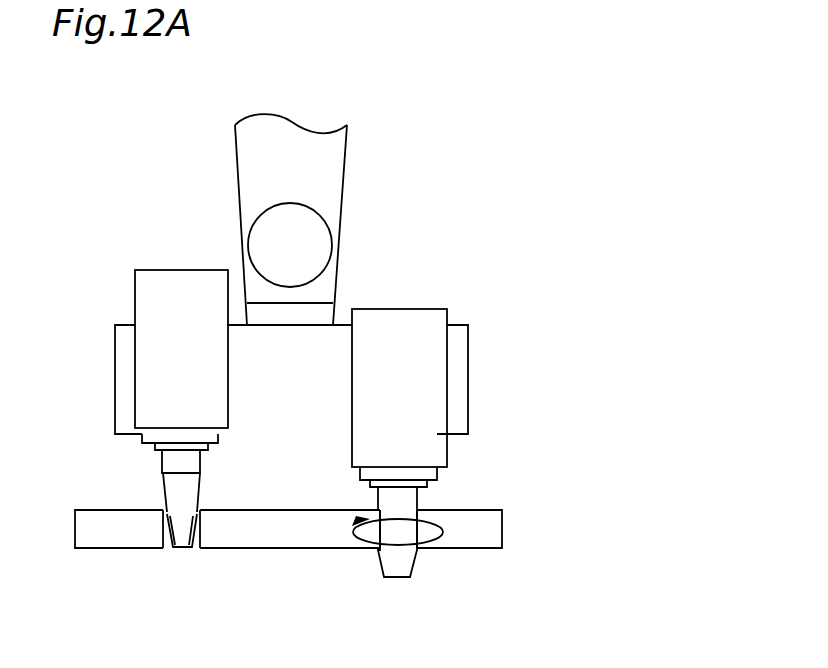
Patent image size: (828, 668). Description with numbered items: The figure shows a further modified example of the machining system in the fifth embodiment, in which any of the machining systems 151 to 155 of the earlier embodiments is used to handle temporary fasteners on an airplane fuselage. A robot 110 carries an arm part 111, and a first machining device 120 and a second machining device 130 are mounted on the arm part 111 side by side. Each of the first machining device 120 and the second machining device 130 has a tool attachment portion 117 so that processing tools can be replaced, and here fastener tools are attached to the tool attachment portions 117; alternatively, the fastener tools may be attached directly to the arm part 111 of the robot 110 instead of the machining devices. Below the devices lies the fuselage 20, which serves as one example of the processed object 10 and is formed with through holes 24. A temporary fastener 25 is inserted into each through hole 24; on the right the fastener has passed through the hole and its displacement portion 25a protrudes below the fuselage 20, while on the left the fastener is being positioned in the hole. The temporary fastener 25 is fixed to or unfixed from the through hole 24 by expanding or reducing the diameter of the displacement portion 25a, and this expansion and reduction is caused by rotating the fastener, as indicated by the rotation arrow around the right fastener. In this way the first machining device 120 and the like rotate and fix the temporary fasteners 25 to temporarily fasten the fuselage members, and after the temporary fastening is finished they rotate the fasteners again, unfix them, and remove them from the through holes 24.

The robot 110 is at (356, 153).
The arm part 111 is at (283, 405).
The first machining device 120 is at (453, 307).
The second machining device 130 is at (131, 280).
The tool attachment portion 117 is at (143, 440).
The temporary fastener 25 is at (178, 488).
The displacement portion 25a is at (189, 543).
The through hole 24 is at (173, 549).
The fuselage 20 is at (335, 498).
The processed object 10 is at (478, 502).
The machining system 151 is at (626, 189).
The machining system 155 is at (714, 199).